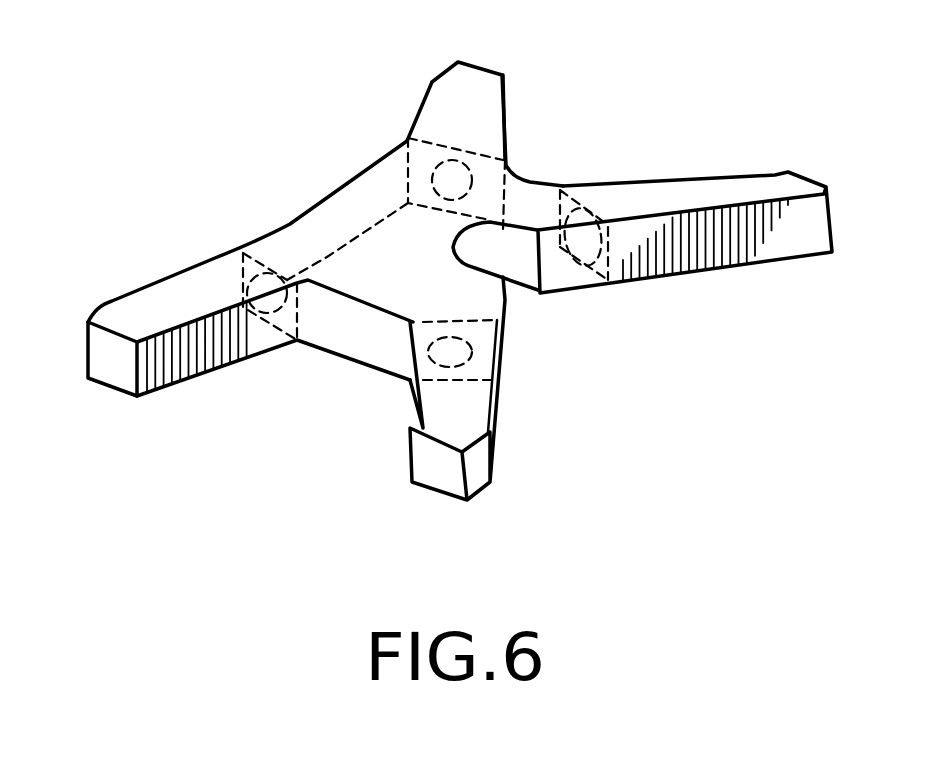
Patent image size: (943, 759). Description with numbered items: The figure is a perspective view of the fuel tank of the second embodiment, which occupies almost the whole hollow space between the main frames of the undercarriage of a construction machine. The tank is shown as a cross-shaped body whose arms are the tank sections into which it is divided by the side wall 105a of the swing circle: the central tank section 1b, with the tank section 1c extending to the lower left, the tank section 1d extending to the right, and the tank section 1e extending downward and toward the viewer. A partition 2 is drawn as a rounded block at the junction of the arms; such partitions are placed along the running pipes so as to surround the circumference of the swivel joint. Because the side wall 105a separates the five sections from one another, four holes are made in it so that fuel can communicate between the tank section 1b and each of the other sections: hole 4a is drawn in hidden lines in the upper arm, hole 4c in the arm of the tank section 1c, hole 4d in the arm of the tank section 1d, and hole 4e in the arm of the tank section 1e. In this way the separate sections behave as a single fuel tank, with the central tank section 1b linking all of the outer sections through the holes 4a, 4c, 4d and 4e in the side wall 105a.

The tank section 1b is at (347, 205).
The tank section 1c is at (155, 307).
The tank section 1d is at (728, 192).
The tank section 1e is at (453, 425).
The partition 2 is at (487, 248).
The hole 4a is at (442, 178).
The hole 4c is at (253, 277).
The hole 4d is at (596, 266).
The hole 4e is at (467, 355).
The side wall 105a is at (510, 100).